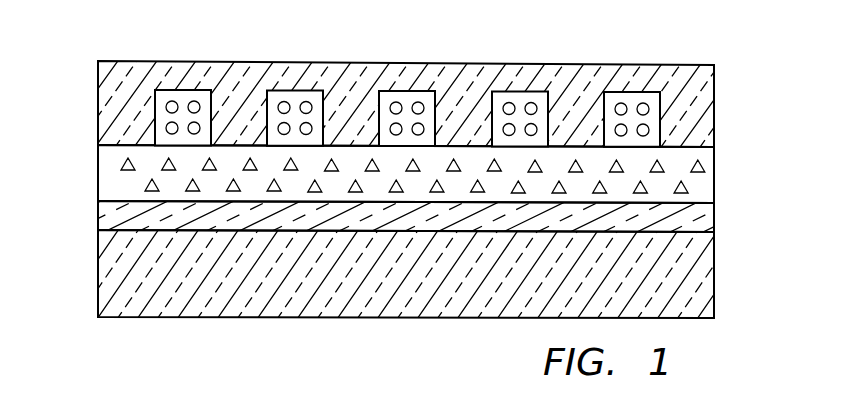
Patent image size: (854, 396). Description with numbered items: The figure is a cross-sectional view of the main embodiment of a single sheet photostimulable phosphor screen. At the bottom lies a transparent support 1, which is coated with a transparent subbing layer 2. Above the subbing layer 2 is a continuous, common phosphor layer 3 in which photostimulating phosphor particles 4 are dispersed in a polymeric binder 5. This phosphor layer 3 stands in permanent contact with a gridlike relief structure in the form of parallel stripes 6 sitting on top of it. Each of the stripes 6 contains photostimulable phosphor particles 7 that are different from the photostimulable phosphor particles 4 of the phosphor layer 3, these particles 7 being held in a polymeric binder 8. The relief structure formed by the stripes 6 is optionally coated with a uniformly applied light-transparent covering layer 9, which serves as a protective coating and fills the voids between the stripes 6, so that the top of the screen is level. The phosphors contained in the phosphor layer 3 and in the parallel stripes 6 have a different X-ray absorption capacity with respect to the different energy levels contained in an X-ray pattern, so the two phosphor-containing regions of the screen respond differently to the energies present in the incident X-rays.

The transparent support 1 is at (685, 278).
The transparent subbing layer 2 is at (687, 220).
The phosphor layer 3 is at (386, 165).
The photostimulating phosphor particles 4 is at (703, 170).
The polymeric binder 5 is at (703, 192).
The parallel stripes 6 is at (165, 117).
The photostimulable phosphor particles 7 is at (647, 110).
The polymeric binder 8 is at (632, 100).
The light-transparent covering layer 9 is at (273, 72).